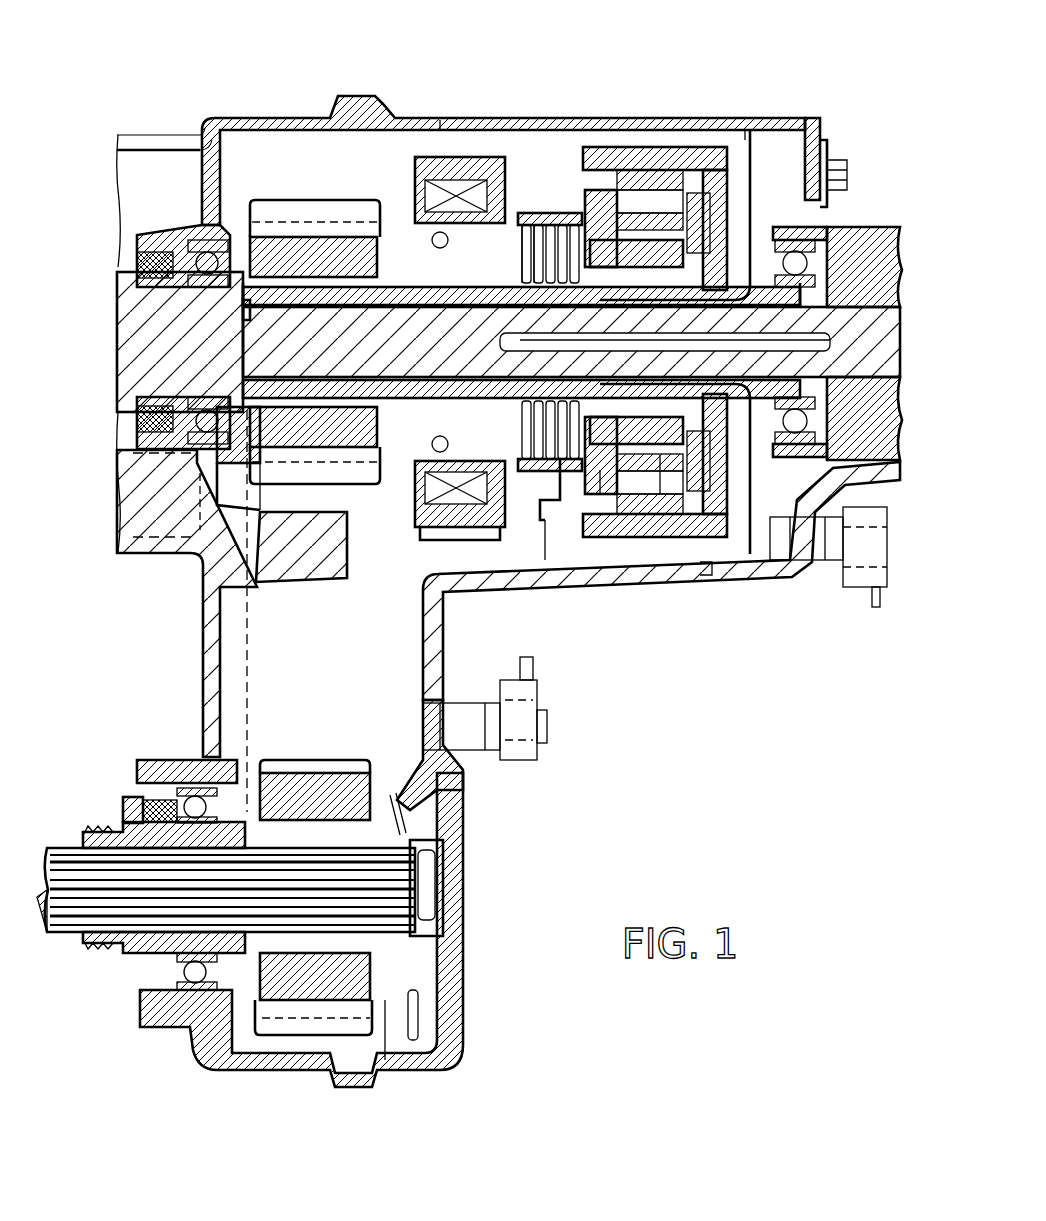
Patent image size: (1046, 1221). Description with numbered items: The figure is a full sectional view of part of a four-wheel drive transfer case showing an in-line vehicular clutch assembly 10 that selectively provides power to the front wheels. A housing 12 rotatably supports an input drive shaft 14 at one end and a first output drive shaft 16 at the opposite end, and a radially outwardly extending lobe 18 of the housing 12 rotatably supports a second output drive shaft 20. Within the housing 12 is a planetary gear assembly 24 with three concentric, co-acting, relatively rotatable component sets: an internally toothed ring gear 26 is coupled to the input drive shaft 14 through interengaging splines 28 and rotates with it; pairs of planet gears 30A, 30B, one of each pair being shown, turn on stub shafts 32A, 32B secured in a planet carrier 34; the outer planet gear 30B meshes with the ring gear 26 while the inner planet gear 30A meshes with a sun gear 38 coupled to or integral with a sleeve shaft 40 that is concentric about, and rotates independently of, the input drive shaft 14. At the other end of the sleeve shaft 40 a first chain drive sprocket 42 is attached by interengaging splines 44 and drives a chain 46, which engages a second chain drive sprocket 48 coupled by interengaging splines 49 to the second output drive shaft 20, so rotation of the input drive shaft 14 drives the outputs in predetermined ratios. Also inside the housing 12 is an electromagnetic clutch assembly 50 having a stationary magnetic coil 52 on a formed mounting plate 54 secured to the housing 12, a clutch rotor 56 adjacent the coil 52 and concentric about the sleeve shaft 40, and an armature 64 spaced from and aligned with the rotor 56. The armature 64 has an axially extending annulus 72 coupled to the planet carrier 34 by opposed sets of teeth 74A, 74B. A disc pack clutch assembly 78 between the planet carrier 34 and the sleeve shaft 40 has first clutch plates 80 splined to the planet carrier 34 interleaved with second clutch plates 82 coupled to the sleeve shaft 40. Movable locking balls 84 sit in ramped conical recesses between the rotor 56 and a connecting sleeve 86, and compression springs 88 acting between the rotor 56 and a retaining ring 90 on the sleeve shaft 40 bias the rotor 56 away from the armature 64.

The clutch assembly 10 is at (760, 118).
The housing 12 is at (775, 585).
The input drive shaft 14 is at (135, 350).
The first output drive shaft 16 is at (885, 260).
The lobe 18 is at (208, 720).
The second output drive shaft 20 is at (60, 925).
The planetary gear assembly 24 is at (740, 128).
The ring gear 26 is at (690, 200).
The interengaging splines 28 is at (810, 262).
The inner planet gear 30A is at (770, 140).
The outer planet gear 30B is at (700, 570).
The stub shaft 32A is at (680, 255).
The stub shaft 32B is at (680, 445).
The planet carrier 34 is at (678, 140).
The sun gear 38 is at (665, 500).
The sleeve shaft 40 is at (385, 305).
The first chain drive sprocket 42 is at (295, 200).
The interengaging splines 44 is at (205, 290).
The chain 46 is at (292, 705).
The second chain drive sprocket 48 is at (355, 1035).
The interengaging splines 49 is at (405, 822).
The electromagnetic clutch assembly 50 is at (446, 118).
The magnetic coil 52 is at (420, 160).
The mounting plate 54 is at (408, 527).
The clutch rotor 56 is at (548, 510).
The armature 64 is at (560, 195).
The annulus 72 is at (535, 215).
The teeth 74A is at (545, 220).
The teeth 74B is at (560, 222).
The disc pack clutch assembly 78 is at (555, 510).
The first clutch plates 80 is at (575, 570).
The second clutch plates 82 is at (600, 470).
The locking balls 84 is at (490, 528).
The connecting sleeve 86 is at (380, 470).
The compression springs 88 is at (445, 305).
The retaining ring 90 is at (495, 305).